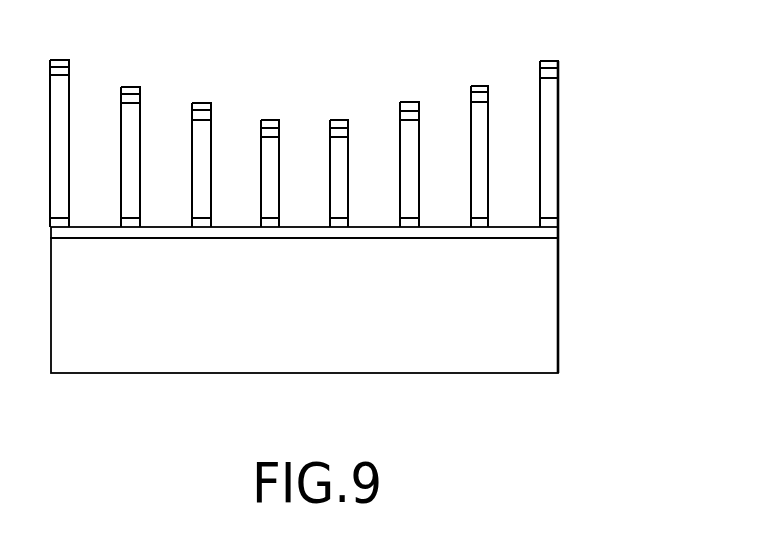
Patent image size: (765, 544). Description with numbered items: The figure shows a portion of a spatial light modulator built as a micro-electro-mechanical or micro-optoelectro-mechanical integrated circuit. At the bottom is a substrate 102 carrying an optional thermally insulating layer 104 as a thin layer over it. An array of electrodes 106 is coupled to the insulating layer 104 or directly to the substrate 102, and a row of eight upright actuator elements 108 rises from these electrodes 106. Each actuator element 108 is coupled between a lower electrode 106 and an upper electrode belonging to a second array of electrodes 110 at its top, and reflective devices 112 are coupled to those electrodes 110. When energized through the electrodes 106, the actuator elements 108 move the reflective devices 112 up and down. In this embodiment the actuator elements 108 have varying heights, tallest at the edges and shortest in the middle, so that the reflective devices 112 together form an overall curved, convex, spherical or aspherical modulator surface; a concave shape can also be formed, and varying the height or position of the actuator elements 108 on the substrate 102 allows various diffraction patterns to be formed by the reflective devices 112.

The substrate 102 is at (547, 325).
The thermally insulating layer 104 is at (557, 235).
The electrodes 106 is at (557, 220).
The actuator elements 108 is at (550, 167).
The electrodes 110 is at (553, 70).
The reflective devices 112 is at (543, 62).